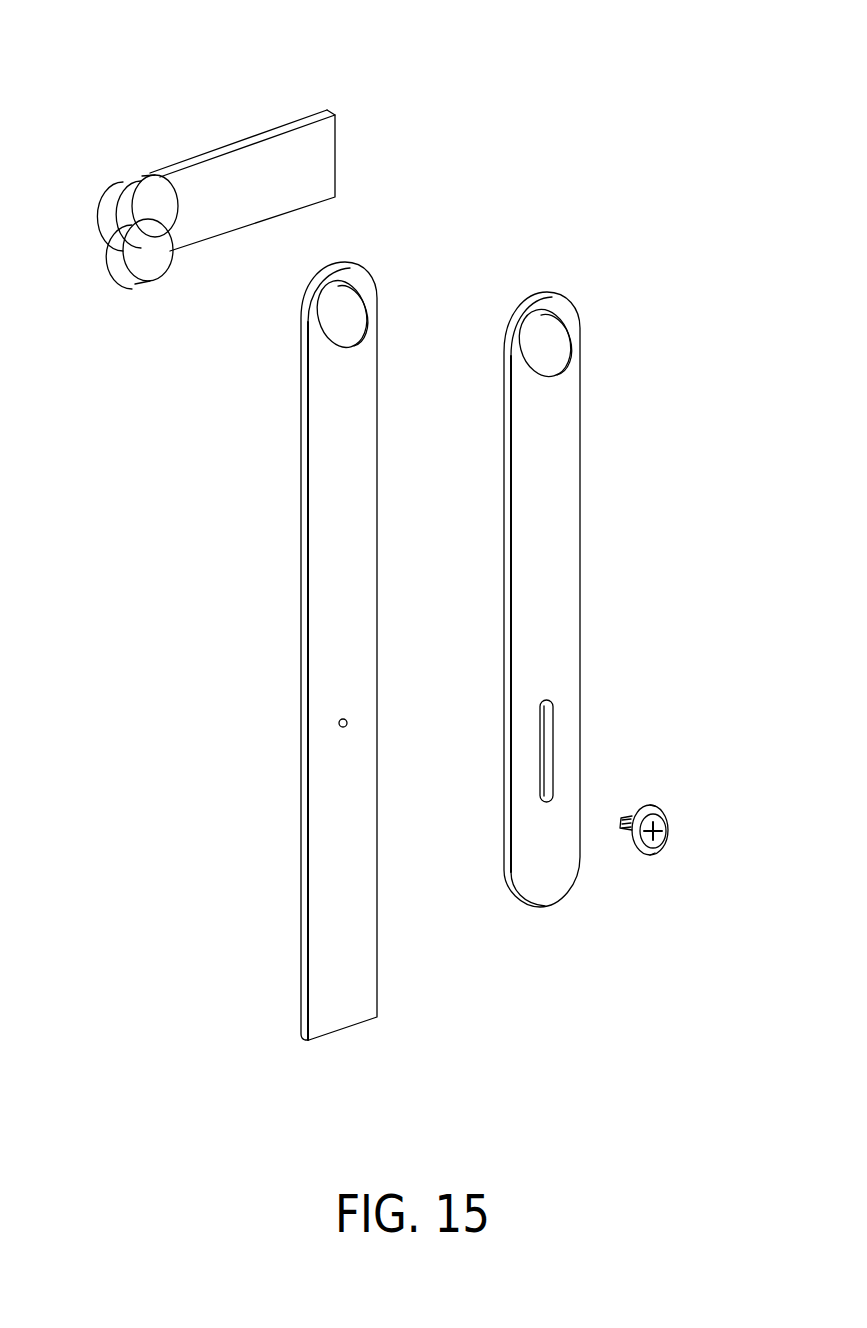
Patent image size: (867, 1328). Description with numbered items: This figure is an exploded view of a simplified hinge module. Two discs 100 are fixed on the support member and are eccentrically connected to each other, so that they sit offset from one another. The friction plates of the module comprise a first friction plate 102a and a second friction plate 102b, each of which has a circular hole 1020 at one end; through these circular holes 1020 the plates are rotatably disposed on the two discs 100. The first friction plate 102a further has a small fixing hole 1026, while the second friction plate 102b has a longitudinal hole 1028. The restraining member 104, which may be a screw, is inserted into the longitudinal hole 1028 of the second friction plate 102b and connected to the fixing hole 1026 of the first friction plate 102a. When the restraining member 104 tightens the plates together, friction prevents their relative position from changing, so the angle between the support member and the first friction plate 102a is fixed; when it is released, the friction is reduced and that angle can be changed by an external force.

The discs 100 is at (153, 187).
The first friction plate 102a is at (301, 619).
The second friction plate 102b is at (580, 522).
The circular hole 1020 is at (355, 281).
The fixing hole 1026 is at (343, 730).
The longitudinal hole 1028 is at (548, 746).
The restraining member 104 is at (662, 815).